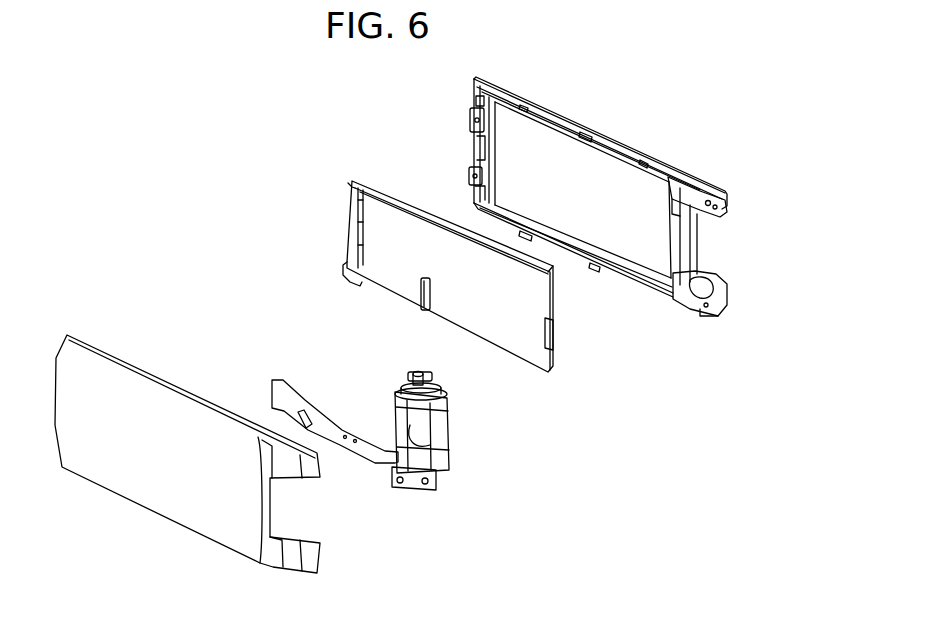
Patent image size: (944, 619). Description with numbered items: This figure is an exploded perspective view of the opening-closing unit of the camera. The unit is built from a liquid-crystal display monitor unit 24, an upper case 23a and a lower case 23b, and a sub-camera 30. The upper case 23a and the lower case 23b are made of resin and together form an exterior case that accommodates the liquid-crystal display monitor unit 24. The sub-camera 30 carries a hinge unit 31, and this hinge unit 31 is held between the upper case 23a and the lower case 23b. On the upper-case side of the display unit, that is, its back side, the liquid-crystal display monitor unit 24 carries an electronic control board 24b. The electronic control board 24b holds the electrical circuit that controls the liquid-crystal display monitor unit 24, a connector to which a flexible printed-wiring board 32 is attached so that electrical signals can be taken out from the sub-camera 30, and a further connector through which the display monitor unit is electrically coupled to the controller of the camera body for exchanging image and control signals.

The upper case 23a is at (168, 473).
The lower case 23b is at (553, 114).
The liquid-crystal display monitor unit 24 is at (358, 210).
The electronic control board 24b is at (503, 333).
The sub-camera 30 is at (437, 448).
The hinge unit 31 is at (413, 372).
The flexible printed-wiring board 32 is at (278, 390).